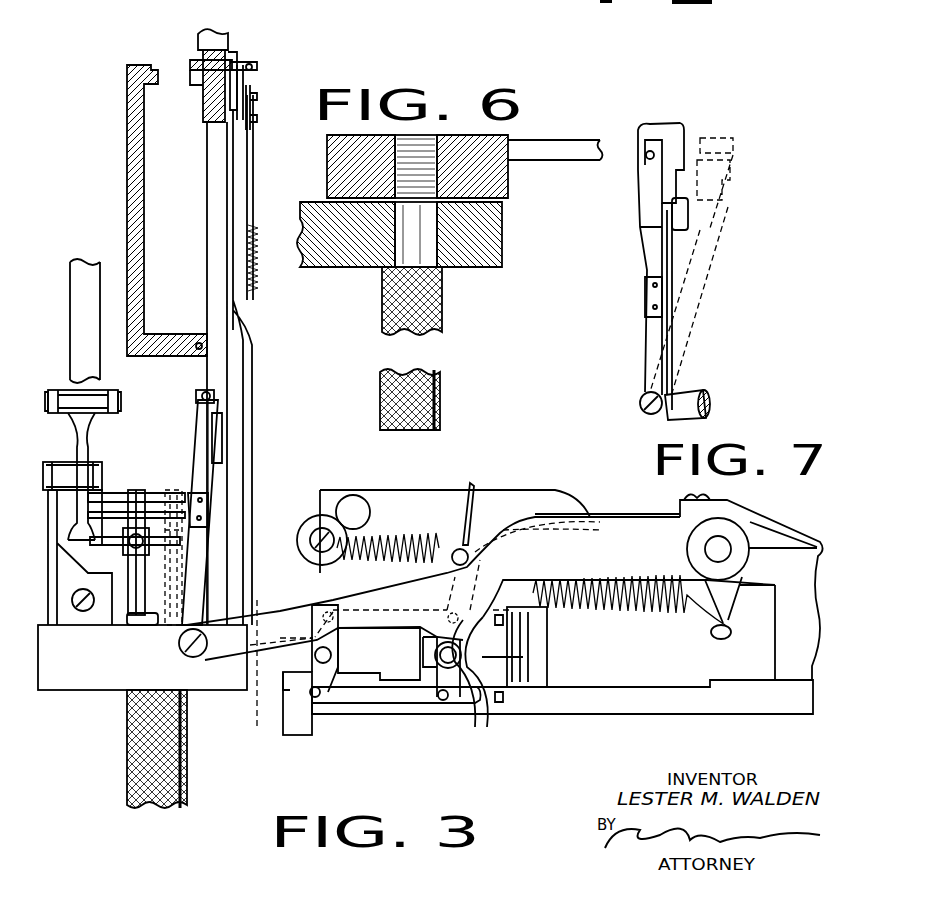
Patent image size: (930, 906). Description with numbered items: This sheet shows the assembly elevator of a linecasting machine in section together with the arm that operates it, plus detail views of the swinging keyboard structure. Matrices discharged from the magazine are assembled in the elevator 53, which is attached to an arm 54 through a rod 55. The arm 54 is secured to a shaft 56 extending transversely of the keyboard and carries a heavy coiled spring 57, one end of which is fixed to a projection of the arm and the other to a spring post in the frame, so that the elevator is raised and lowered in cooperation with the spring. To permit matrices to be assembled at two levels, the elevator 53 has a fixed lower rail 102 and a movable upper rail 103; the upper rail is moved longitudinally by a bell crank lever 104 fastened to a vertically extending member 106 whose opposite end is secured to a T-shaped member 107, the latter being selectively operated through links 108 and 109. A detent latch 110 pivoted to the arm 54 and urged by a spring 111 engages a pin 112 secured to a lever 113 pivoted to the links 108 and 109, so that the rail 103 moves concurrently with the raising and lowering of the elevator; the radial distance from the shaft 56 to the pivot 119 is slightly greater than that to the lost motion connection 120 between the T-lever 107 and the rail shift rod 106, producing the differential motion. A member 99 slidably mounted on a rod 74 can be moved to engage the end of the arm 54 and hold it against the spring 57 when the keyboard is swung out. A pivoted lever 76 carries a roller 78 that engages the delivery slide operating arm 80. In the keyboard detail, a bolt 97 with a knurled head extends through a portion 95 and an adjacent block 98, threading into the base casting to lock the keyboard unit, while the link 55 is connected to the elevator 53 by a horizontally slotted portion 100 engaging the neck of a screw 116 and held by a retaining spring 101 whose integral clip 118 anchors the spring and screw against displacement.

In FIG. 3, the elevator 53 is at (163, 165).
In FIG. 3, the arm 54 is at (620, 525).
In FIG. 7, the arm 54 is at (708, 409).
In FIG. 3, the rod 55 is at (197, 545).
In FIG. 7, the rod 55 is at (648, 346).
In FIG. 3, the shaft 56 is at (718, 549).
In FIG. 3, the coiled spring 57 is at (590, 606).
In FIG. 3, the rod 74 is at (155, 490).
In FIG. 3, the pivoted lever 76 is at (82, 434).
In FIG. 3, the roller 78 is at (90, 396).
In FIG. 3, the delivery slide operating arm 80 is at (86, 262).
In FIG. 3, the portion 95 is at (92, 688).
In FIG. 6, the portion 95 is at (490, 268).
In FIG. 3, the bolt 97 is at (128, 757).
In FIG. 6, the bolt 97 is at (443, 405).
In FIG. 6, the block 98 is at (345, 161).
In FIG. 3, the member 99 is at (132, 605).
In FIG. 7, the horizontally slotted portion 100 is at (735, 150).
In FIG. 3, the retaining spring 101 is at (210, 455).
In FIG. 7, the retaining spring 101 is at (645, 208).
In FIG. 3, the fixed lower rail 102 is at (200, 78).
In FIG. 3, the movable upper rail 103 is at (193, 64).
In FIG. 3, the bell crank lever 104 is at (250, 80).
In FIG. 3, the vertically extending member 106 is at (243, 420).
In FIG. 3, the T-shaped member 107 is at (330, 704).
In FIG. 3, the link 108 is at (480, 710).
In FIG. 3, the link 109 is at (520, 688).
In FIG. 3, the detent latch 110 is at (497, 530).
In FIG. 3, the spring 111 is at (563, 492).
In FIG. 3, the pin 112 is at (460, 549).
In FIG. 3, the lever 113 is at (477, 553).
In FIG. 3, the screw 116 is at (198, 396).
In FIG. 3, the clip 118 is at (222, 448).
In FIG. 7, the clip 118 is at (690, 213).
In FIG. 3, the pivot 119 is at (197, 660).
In FIG. 7, the pivot 119 is at (649, 410).
In FIG. 3, the lost motion connection 120 is at (280, 676).